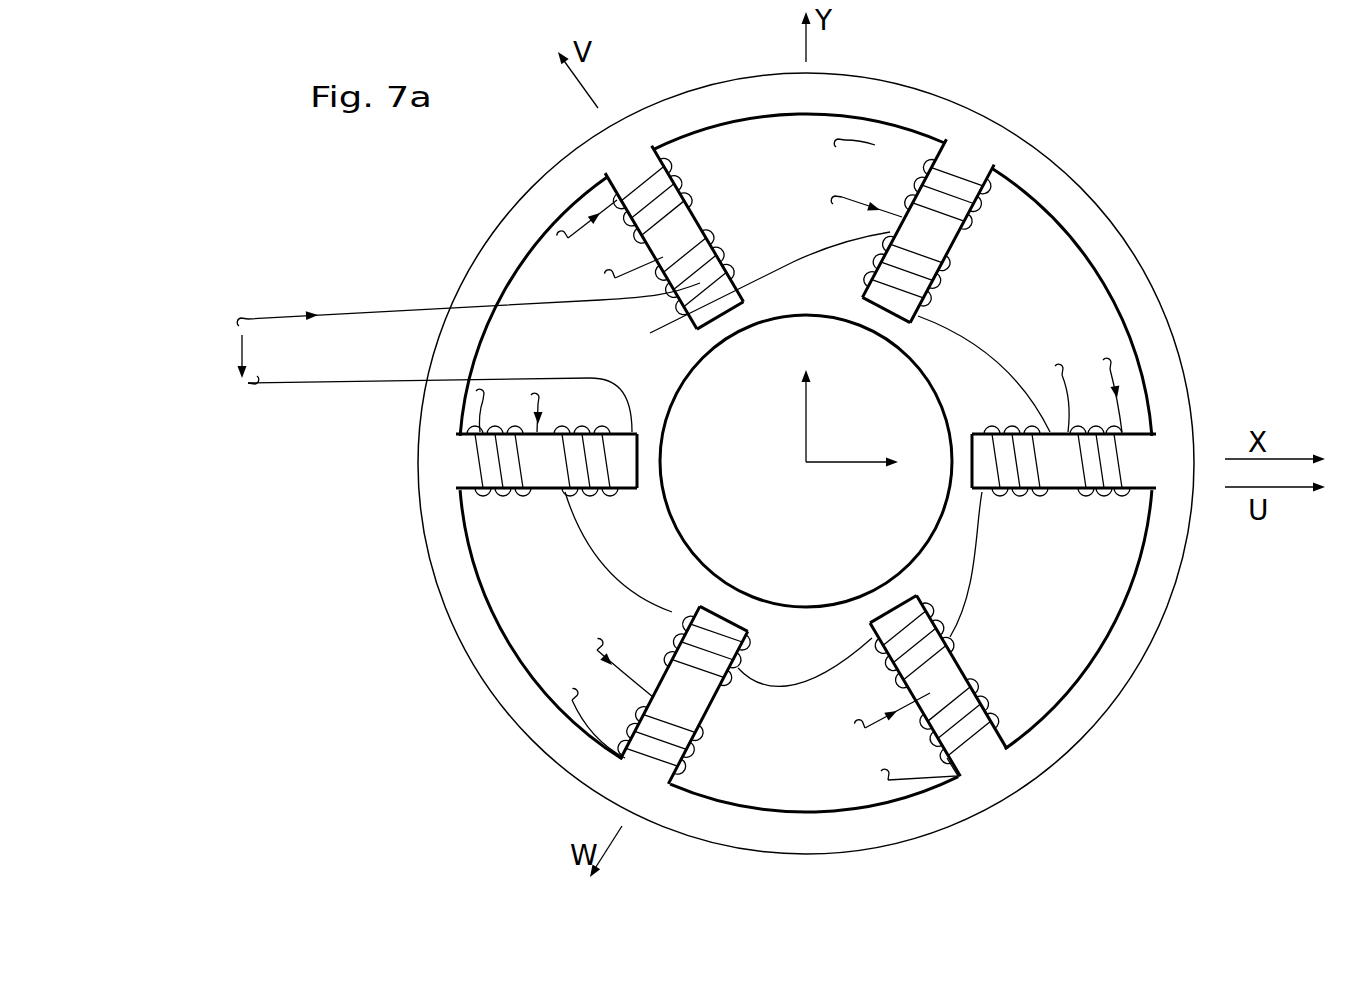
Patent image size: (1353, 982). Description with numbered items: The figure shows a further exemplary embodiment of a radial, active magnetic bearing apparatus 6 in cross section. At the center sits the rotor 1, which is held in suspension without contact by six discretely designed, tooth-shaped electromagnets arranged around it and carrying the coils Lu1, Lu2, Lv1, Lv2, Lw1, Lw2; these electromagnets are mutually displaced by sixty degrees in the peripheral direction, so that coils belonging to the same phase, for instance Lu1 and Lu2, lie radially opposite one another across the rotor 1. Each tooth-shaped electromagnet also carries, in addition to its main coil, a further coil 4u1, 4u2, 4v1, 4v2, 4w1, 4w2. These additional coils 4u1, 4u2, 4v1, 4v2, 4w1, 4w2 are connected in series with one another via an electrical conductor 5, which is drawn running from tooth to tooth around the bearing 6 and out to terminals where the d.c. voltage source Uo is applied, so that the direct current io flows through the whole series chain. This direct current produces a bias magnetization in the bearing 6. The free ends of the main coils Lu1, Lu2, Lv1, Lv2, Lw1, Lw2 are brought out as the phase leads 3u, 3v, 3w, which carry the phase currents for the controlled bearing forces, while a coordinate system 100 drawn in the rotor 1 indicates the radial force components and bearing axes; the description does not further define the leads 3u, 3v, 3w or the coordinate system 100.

The rotor 1 is at (767, 572).
The electrical conductor 5 is at (348, 311).
The radial active magnetic bearing apparatus 6 is at (1197, 193).
The coordinate system / force components 100 is at (800, 474).
The winding terminal u 3u is at (480, 402).
The winding terminal v 3v is at (577, 230).
The winding terminal w 3w is at (875, 143).
The coil 4u1 is at (1008, 428).
The coil 4u2 is at (613, 493).
The coil 4v1 is at (690, 308).
The coil 4v2 is at (938, 610).
The coil 4w1 is at (738, 668).
The coil 4w2 is at (867, 273).
The coil Lu1 is at (1090, 506).
The coil Lu2 is at (512, 499).
The coil Lv1 is at (637, 218).
The coil Lv2 is at (974, 670).
The coil Lw1 is at (727, 726).
The coil Lw2 is at (945, 236).